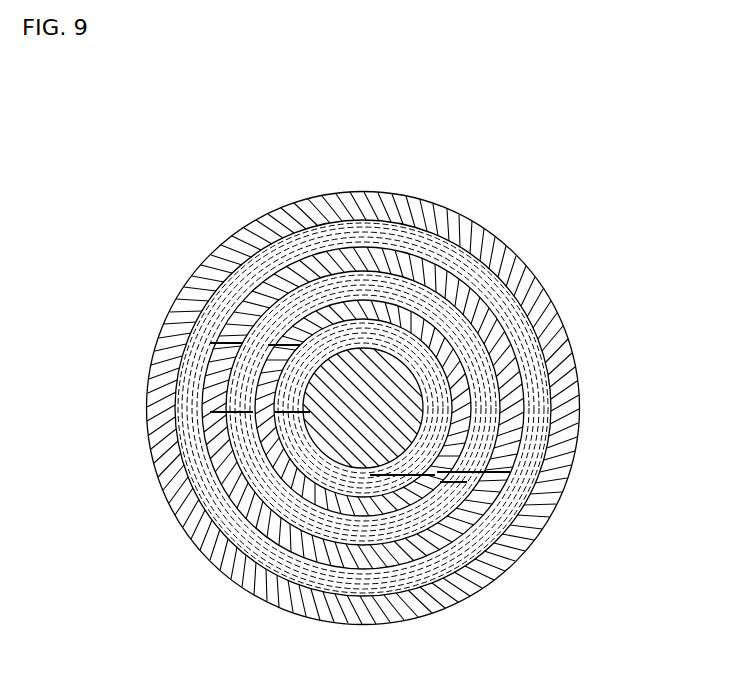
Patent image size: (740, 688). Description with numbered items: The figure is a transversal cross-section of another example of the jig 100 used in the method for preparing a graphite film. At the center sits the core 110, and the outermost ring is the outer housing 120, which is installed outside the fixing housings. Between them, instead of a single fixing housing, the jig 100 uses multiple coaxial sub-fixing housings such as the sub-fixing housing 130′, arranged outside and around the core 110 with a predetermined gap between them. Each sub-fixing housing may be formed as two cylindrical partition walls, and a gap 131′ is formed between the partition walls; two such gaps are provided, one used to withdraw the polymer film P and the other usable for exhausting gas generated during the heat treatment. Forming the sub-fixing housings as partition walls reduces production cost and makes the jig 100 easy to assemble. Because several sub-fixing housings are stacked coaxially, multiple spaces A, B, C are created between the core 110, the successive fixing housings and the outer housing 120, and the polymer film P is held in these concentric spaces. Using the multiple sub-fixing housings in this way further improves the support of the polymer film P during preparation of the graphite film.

The jig 100 is at (232, 170).
The core 110 is at (343, 407).
The outer housing 120 is at (558, 332).
The sub-fixing housing 130′ is at (482, 298).
The gap 131′ is at (250, 283).
The polymer film P is at (205, 555).
The space A is at (372, 481).
The space B is at (352, 538).
The space C is at (325, 585).